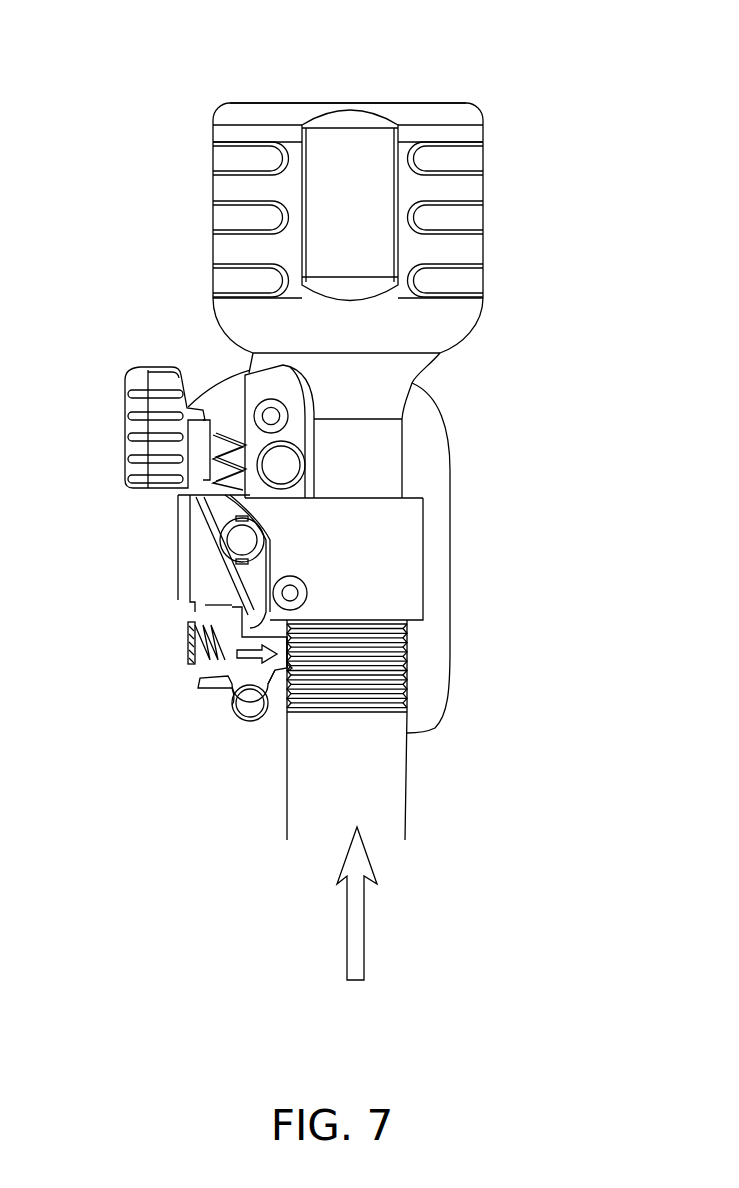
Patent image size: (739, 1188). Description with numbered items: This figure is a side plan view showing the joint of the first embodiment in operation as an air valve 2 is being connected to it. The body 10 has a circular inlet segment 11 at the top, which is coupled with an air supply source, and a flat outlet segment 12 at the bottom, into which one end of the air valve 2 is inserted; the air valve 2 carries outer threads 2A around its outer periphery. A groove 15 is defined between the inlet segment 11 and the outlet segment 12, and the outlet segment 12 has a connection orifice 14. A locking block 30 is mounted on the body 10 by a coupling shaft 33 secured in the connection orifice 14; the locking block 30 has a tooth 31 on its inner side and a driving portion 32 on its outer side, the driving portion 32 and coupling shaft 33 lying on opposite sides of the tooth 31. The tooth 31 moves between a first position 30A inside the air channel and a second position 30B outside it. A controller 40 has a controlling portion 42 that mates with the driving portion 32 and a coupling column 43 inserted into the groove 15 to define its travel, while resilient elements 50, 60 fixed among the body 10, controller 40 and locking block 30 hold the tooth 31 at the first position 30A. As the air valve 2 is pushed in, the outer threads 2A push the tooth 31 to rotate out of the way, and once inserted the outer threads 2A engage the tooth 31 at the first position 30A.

The body 10 is at (485, 205).
The inlet segment 11 is at (328, 103).
The outlet segment 12 is at (408, 737).
The air valve 2 is at (400, 826).
The outer threads 2A is at (370, 667).
The connection orifice 14 is at (247, 718).
The groove 15 is at (225, 545).
The locking block 30 is at (232, 672).
The first position 30A is at (291, 632).
The second position 30B is at (282, 660).
The tooth 31 is at (291, 640).
The driving portion 32 is at (215, 604).
The coupling shaft 33 is at (250, 703).
The controller 40 is at (122, 440).
The controlling portion 42 is at (232, 572).
The coupling column 43 is at (240, 538).
The resilient element 50 is at (194, 638).
The resilient element 60 is at (230, 428).